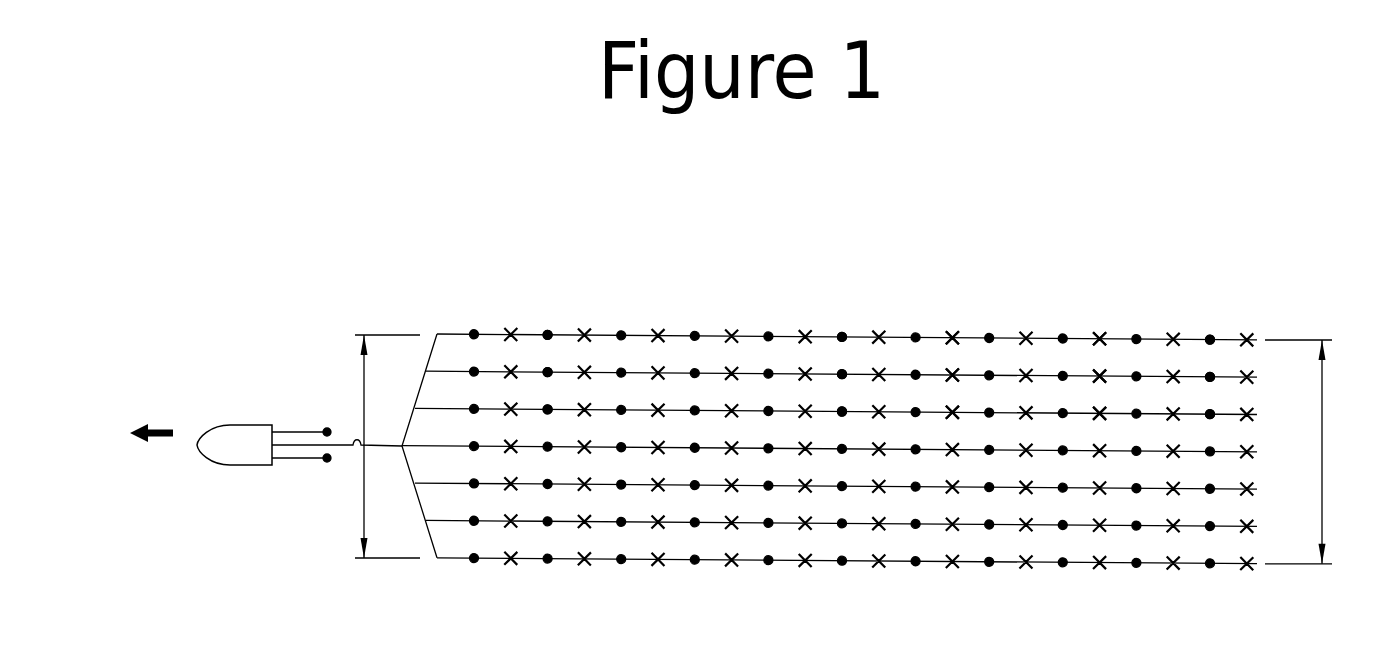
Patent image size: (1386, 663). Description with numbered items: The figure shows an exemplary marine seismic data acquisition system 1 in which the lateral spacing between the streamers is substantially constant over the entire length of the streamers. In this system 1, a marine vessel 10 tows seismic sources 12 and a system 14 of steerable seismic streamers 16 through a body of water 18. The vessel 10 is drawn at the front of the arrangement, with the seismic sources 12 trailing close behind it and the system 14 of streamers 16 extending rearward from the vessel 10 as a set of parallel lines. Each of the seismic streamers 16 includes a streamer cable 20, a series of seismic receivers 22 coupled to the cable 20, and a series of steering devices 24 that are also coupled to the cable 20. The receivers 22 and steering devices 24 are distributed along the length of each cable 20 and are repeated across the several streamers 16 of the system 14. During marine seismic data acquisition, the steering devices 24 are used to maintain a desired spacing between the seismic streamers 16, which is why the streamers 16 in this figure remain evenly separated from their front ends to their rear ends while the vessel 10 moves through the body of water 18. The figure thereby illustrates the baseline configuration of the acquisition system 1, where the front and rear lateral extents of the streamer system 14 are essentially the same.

The marine seismic data acquisition system 1 is at (1213, 210).
The marine vessel 10 is at (232, 430).
The seismic sources 12 is at (327, 430).
The system of steerable seismic streamers 14 is at (712, 302).
The seismic streamers 16 is at (437, 407).
The body of water 18 is at (205, 526).
The streamer cable 20 is at (556, 410).
The seismic receivers 22 is at (846, 412).
The steering devices 24 is at (1098, 414).